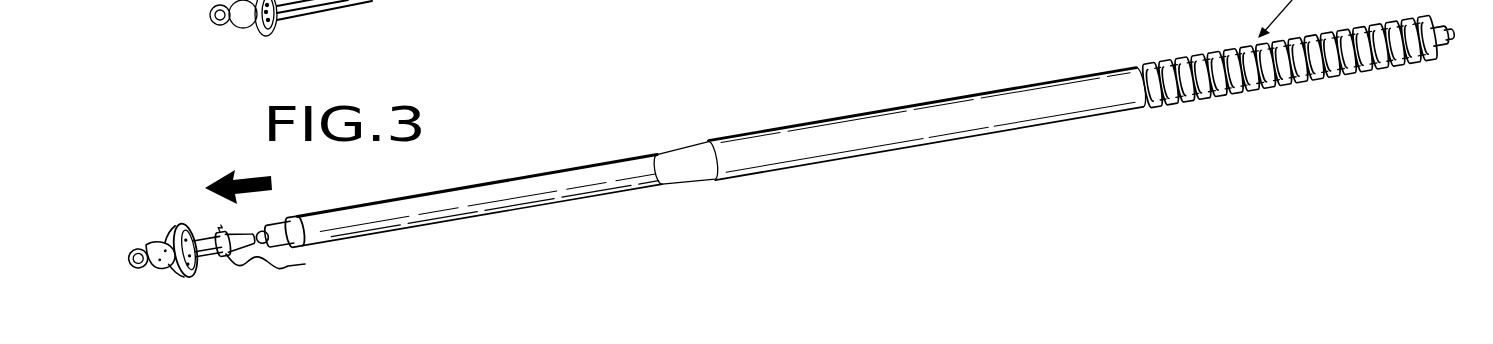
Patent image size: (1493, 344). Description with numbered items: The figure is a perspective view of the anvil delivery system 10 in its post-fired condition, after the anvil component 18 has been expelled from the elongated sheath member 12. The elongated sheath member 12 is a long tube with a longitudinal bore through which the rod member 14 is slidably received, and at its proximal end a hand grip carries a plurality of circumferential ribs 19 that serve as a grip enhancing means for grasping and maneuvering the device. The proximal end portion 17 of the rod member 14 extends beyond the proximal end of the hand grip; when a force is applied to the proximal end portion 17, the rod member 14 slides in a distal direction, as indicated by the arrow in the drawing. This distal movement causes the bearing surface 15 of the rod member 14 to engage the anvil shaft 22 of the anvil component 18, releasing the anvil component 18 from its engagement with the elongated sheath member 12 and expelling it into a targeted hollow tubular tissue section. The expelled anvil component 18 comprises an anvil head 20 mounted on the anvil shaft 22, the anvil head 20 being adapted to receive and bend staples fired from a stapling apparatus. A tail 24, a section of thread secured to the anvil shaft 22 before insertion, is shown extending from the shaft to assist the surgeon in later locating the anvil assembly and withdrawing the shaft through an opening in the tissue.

The anvil delivery system 10 is at (611, 139).
The elongated sheath member 12 is at (972, 100).
The rod member 14 is at (292, 220).
The bearing surface 15 is at (257, 224).
The proximal end portion 17 is at (1457, 33).
The anvil component 18 is at (166, 206).
The circumferential ribs 19 is at (1266, 84).
The anvil head 20 is at (166, 274).
The anvil shaft 22 is at (215, 258).
The tail 24 is at (283, 271).